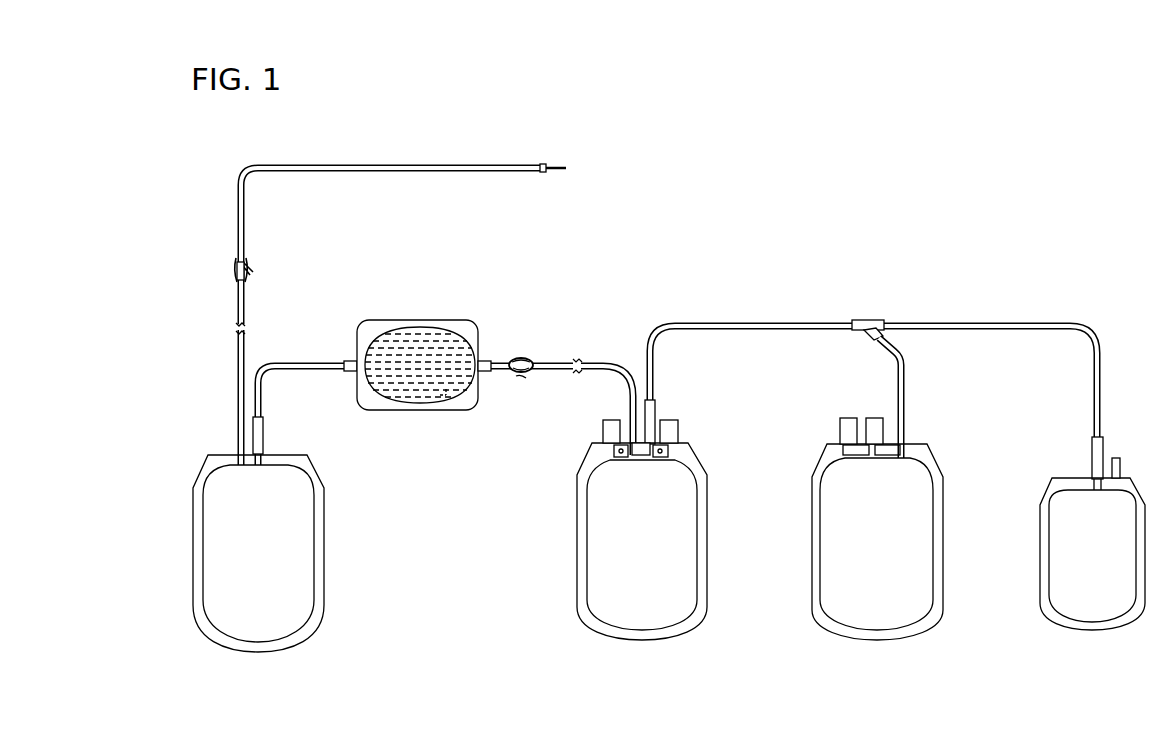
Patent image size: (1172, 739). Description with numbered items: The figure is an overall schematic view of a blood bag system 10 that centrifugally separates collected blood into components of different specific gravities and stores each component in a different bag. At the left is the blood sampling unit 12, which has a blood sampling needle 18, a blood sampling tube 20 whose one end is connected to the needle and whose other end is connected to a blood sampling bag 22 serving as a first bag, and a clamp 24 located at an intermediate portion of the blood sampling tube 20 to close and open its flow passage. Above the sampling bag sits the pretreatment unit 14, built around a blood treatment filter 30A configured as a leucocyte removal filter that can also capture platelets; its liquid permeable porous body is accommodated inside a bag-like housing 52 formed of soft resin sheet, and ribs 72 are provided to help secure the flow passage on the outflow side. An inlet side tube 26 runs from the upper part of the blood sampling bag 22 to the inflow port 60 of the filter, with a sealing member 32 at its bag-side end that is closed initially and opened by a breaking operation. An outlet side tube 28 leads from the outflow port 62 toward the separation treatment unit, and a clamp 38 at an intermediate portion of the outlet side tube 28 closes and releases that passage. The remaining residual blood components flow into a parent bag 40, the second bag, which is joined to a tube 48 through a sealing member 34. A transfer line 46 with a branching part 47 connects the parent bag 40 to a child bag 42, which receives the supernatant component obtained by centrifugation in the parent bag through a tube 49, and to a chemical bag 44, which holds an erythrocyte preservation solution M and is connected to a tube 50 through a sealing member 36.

The blood bag system 10 is at (728, 119).
The blood sampling unit 12 is at (205, 303).
The pretreatment unit 14 is at (408, 369).
The blood sampling needle 18 is at (550, 167).
The blood sampling tube 20 is at (237, 199).
The blood sampling bag 22 is at (262, 640).
The clamp 24 is at (236, 270).
The inlet side tube 26 is at (305, 363).
The outlet side tube 28 is at (556, 362).
The blood treatment filter 30A is at (392, 317).
The sealing member 32 is at (263, 437).
The sealing member 34 is at (656, 408).
The sealing member 36 is at (1091, 458).
The clamp 38 is at (524, 377).
The parent bag 40 is at (643, 628).
The child bag 42 is at (878, 626).
The chemical bag 44 is at (1091, 616).
The transfer line 46 is at (879, 332).
The branching part 47 is at (866, 320).
The tube 48 is at (660, 327).
The tube 49 is at (906, 390).
The tube 50 is at (1102, 369).
The housing 52 is at (416, 330).
The inflow port 60 is at (352, 372).
The outflow port 62 is at (489, 362).
The ribs 72 is at (443, 400).
The erythrocyte preservation solution M is at (1062, 571).